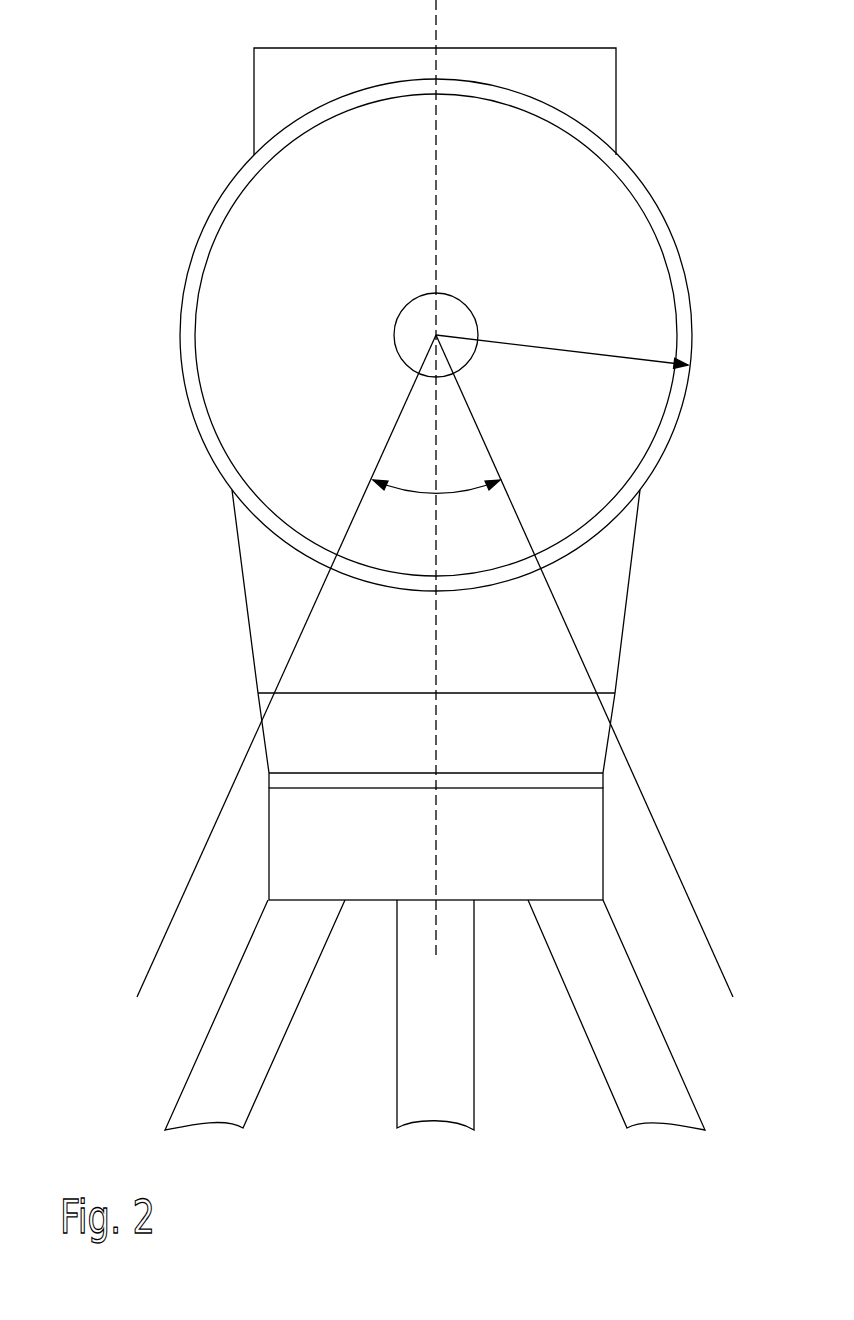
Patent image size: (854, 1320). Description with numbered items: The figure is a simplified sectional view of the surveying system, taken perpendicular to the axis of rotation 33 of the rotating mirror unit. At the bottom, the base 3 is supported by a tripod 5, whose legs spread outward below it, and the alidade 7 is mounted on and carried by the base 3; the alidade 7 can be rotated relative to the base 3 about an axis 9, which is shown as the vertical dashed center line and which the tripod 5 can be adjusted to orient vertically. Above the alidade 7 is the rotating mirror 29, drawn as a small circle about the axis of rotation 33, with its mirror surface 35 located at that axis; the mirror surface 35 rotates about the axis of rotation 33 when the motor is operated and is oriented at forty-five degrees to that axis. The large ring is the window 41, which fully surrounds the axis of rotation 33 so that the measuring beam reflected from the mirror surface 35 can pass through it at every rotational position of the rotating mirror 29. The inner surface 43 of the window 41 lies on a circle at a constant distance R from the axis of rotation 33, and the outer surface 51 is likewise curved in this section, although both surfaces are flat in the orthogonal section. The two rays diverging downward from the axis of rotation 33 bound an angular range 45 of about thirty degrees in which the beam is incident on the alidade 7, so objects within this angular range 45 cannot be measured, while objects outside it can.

The base 3 is at (604, 876).
The tripod 5 is at (676, 1063).
The alidade 7 is at (608, 753).
The axis 9 is at (436, 860).
The rotating mirror 29 is at (474, 352).
The axis of rotation 33 is at (436, 335).
The mirror surface 35 is at (430, 336).
The window 41 is at (463, 335).
The inner surface 43 is at (667, 279).
The angular range 45 is at (462, 494).
The outer surface 51 is at (678, 253).
The distance R is at (562, 343).